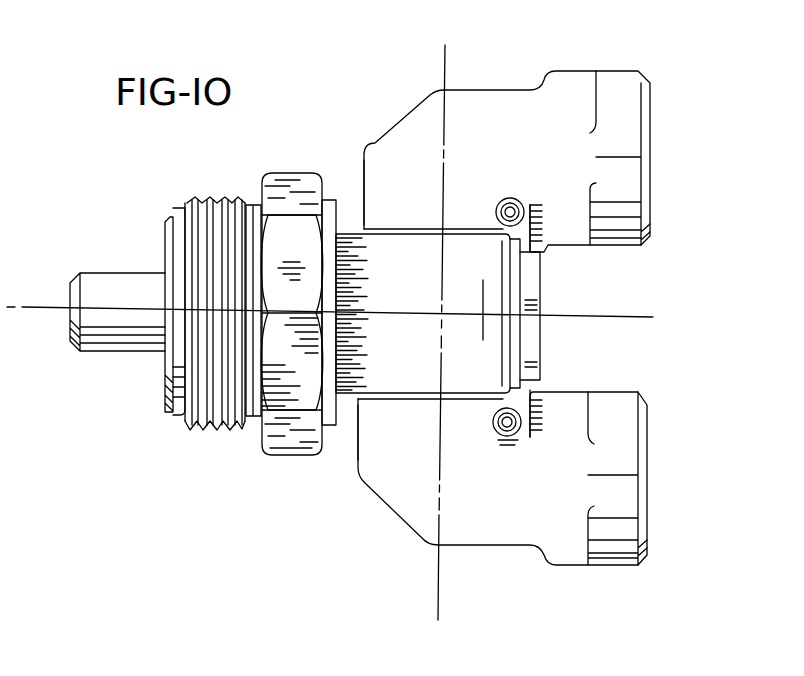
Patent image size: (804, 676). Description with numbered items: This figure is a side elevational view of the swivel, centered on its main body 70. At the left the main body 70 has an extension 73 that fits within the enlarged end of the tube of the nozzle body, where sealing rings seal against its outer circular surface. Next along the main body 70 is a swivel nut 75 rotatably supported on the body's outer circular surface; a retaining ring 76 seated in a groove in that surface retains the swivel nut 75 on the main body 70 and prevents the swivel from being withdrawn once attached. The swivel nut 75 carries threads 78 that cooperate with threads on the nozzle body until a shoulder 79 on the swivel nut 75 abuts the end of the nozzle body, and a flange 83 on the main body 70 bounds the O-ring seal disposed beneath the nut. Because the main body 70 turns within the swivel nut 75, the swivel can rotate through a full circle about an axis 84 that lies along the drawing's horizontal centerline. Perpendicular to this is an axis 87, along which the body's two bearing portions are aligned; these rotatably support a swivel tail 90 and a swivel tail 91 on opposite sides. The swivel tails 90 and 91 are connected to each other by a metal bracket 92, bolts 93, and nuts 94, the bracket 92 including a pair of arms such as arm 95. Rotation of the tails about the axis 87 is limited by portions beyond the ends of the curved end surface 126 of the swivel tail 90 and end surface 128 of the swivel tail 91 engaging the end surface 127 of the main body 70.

The main body 70 is at (345, 398).
The extension 73 is at (140, 272).
The swivel nut 75 is at (305, 173).
The retaining ring 76 is at (165, 413).
The threads 78 is at (196, 200).
The shoulder 79 is at (253, 425).
The flange 83 is at (330, 203).
The axis 84 is at (618, 317).
The axis 87 is at (445, 58).
The swivel tail 90 is at (517, 548).
The swivel tail 91 is at (571, 71).
The metal bracket 92 is at (545, 352).
The bolts 93 is at (504, 199).
The nuts 94 is at (536, 216).
The arm 95 is at (532, 283).
The end surface 126 is at (353, 435).
The end surface 127 is at (360, 278).
The end surface 128 is at (353, 203).